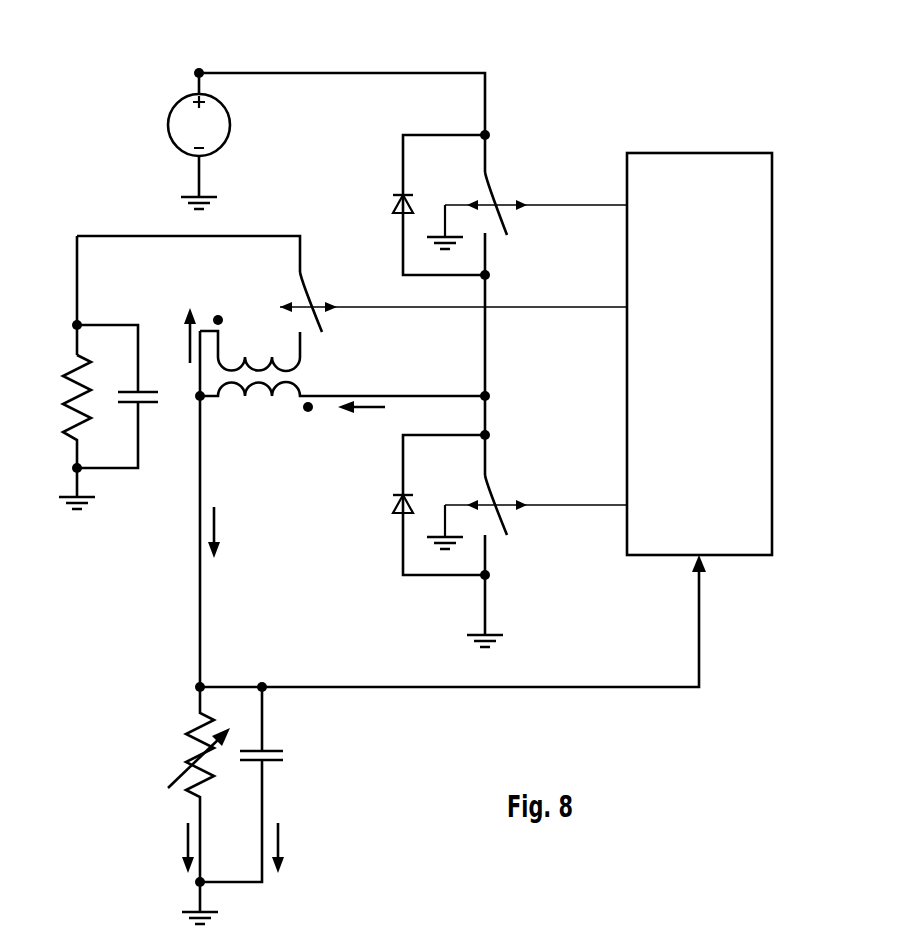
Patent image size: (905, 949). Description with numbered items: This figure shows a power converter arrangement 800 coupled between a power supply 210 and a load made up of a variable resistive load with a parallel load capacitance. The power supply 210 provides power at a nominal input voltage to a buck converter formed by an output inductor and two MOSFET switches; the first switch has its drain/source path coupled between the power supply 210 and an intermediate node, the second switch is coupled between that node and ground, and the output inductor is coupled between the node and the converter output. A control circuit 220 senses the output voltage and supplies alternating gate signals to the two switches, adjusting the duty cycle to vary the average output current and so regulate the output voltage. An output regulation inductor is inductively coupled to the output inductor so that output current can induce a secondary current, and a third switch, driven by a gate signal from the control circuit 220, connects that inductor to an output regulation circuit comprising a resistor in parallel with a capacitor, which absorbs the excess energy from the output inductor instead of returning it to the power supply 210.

The power converter arrangement 800 is at (612, 67).
The power supply 210 is at (170, 115).
The control circuit 220 is at (772, 472).